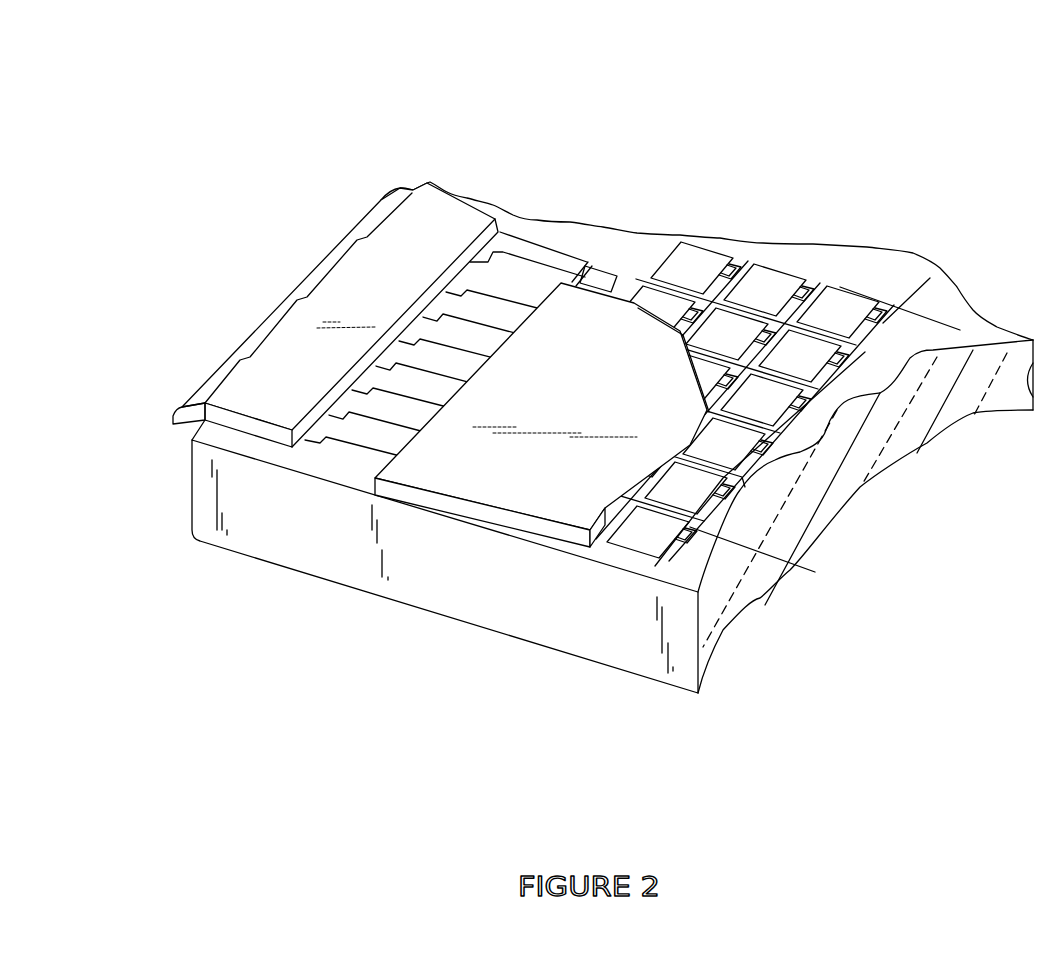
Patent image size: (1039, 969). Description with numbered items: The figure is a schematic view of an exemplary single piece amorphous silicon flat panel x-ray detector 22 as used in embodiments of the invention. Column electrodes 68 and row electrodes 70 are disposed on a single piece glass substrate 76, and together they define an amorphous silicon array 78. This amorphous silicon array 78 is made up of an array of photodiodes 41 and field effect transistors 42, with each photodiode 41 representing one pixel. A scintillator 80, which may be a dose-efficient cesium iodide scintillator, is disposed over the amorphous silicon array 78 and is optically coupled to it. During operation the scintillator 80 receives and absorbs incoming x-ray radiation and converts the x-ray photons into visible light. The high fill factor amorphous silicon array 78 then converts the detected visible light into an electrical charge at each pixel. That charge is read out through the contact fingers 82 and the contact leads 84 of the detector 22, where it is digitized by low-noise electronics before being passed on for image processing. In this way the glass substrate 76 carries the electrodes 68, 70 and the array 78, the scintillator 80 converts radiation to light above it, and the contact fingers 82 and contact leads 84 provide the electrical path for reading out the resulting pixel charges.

The amorphous silicon flat panel x-ray detector 22 is at (539, 131).
The photodiode 41 is at (689, 258).
The field effect transistor 42 is at (733, 260).
The column electrodes 68 is at (745, 487).
The row electrodes 70 is at (827, 263).
The single piece glass substrate 76 is at (651, 662).
The amorphous silicon array 78 is at (620, 551).
The scintillator 80 is at (487, 490).
The contact fingers 82 is at (410, 383).
The contact leads 84 is at (193, 443).